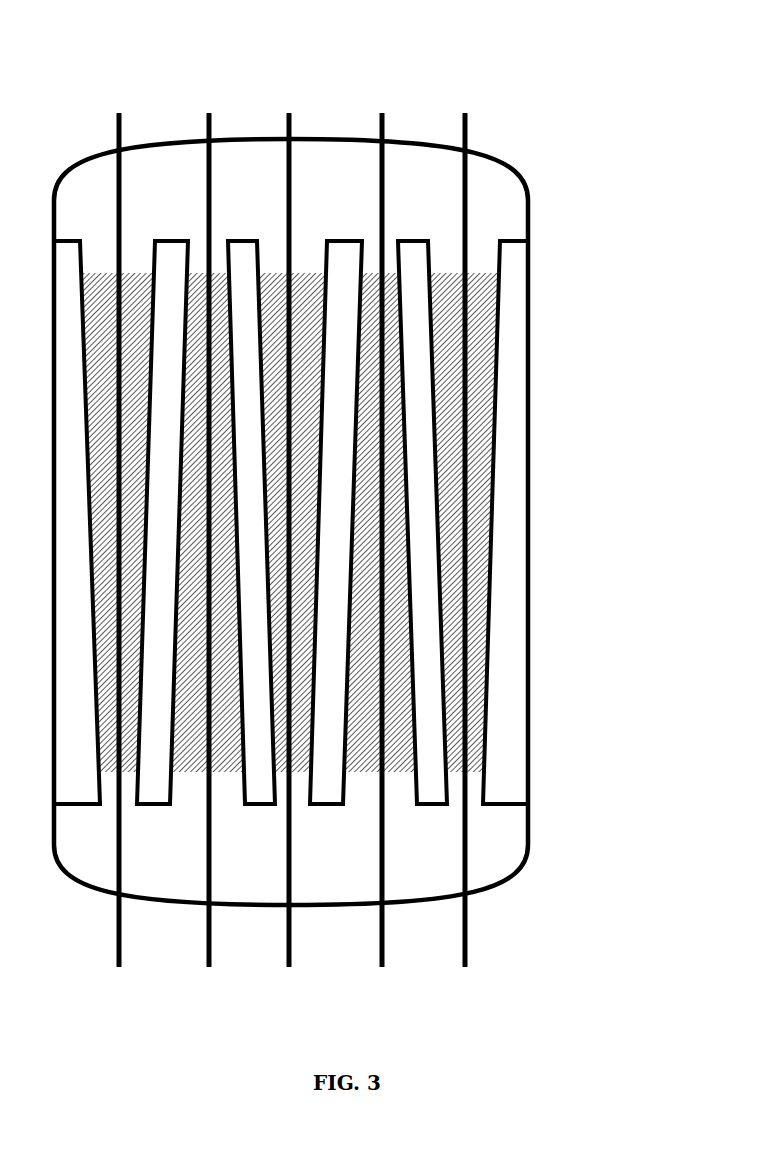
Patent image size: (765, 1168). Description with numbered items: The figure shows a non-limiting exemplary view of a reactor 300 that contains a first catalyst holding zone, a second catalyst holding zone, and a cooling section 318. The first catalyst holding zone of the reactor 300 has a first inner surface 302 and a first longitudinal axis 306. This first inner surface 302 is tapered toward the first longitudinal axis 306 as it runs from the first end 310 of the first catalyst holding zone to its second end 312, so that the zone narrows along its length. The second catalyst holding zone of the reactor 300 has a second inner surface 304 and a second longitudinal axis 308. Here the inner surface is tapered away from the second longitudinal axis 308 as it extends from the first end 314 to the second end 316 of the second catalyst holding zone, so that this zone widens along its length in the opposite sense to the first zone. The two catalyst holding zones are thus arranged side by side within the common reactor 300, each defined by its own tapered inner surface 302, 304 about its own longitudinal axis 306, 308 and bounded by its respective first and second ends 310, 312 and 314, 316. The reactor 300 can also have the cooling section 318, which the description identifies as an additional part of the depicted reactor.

The reactor 300 is at (327, 469).
The first inner surface 302 is at (243, 443).
The second inner surface 304 is at (250, 622).
The first longitudinal axis 306 is at (266, 485).
The second longitudinal axis 308 is at (268, 486).
The first end 310 is at (299, 543).
The second end 312 is at (299, 652).
The first end 314 is at (291, 532).
The second end 316 is at (291, 644).
The cooling section 318 is at (568, 522).